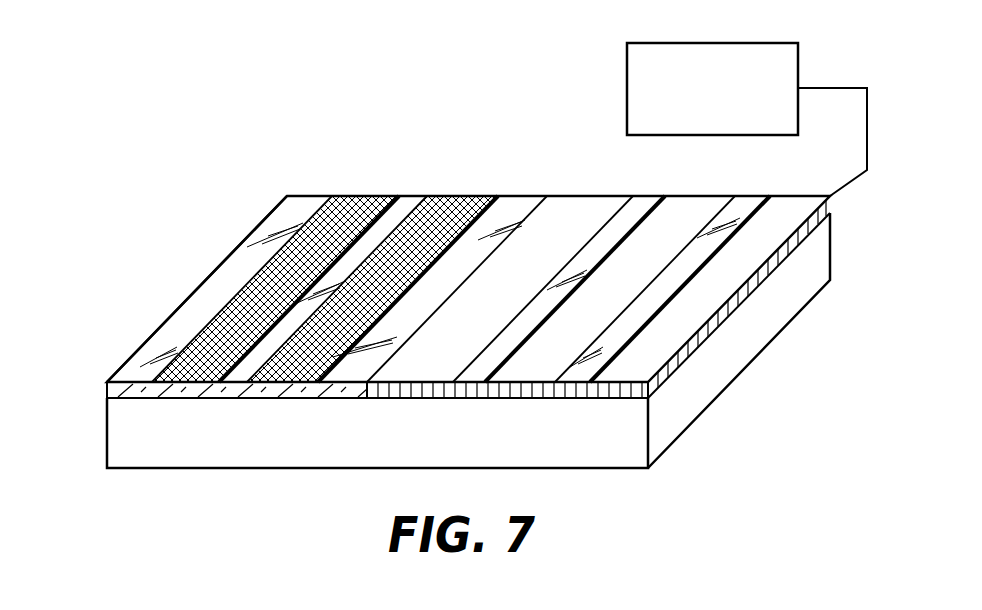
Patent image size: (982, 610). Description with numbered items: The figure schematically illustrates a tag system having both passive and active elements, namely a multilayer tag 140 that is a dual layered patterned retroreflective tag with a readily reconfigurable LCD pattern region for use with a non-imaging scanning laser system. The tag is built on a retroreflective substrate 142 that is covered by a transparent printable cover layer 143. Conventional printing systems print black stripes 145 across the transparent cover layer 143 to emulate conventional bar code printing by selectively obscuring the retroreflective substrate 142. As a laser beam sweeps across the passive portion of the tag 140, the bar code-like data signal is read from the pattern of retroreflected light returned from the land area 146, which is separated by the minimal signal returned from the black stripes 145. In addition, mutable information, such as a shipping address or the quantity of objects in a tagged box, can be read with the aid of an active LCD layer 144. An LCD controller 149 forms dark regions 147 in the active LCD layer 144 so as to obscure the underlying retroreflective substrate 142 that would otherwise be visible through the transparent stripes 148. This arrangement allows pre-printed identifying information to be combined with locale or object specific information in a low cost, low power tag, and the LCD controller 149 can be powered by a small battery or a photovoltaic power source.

The multilayer tag 140 is at (311, 109).
The retroreflective substrate 142 is at (118, 447).
The transparent printable cover layer 143 is at (118, 390).
The active LCD layer 144 is at (727, 313).
The black stripes 145 is at (363, 200).
The land area 146 is at (302, 205).
The dark regions 147 is at (598, 205).
The transparent stripes 148 is at (647, 197).
The LCD controller 149 is at (744, 43).